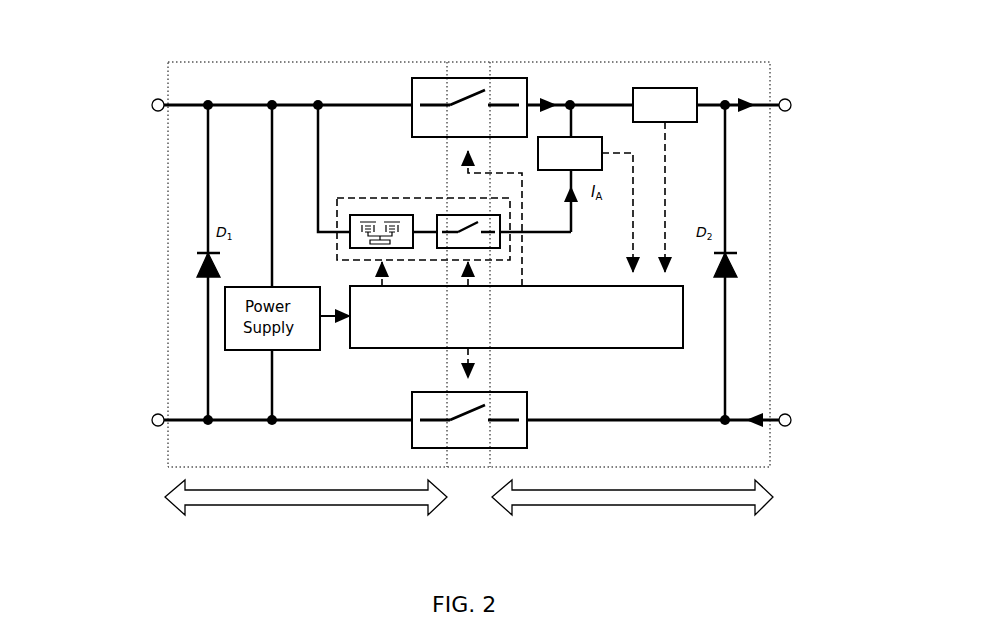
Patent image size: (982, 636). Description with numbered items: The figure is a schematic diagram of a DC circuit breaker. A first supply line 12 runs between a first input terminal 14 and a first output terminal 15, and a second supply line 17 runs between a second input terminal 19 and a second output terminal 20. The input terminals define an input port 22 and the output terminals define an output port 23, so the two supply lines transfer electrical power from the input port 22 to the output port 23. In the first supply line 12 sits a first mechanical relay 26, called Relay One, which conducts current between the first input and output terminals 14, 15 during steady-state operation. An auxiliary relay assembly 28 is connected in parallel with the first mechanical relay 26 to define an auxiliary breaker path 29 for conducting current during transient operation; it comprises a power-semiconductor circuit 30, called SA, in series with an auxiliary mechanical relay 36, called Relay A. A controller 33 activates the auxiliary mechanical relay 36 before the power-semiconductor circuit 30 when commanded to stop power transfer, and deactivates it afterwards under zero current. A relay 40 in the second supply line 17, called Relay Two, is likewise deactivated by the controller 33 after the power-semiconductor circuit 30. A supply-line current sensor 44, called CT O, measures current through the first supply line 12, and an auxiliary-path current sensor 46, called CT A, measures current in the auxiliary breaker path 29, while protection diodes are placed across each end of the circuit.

The first supply line 12 is at (238, 105).
The first input terminal 14 is at (153, 101).
The first output terminal 15 is at (789, 99).
The second supply line 17 is at (238, 420).
The second input terminal 19 is at (154, 426).
The second output terminal 20 is at (789, 426).
The input port 22 is at (117, 250).
The output port 23 is at (836, 262).
The first mechanical relay 26 is at (425, 78).
The auxiliary relay assembly 28 is at (337, 200).
The auxiliary breaker path 29 is at (312, 168).
The power-semiconductor circuit 30 is at (360, 215).
The controller 33 is at (583, 349).
The auxiliary mechanical relay 36 is at (434, 212).
The relay in the second supply line 40 is at (412, 401).
The supply-line current sensor 44 is at (666, 88).
The auxiliary-path current sensor 46 is at (580, 137).